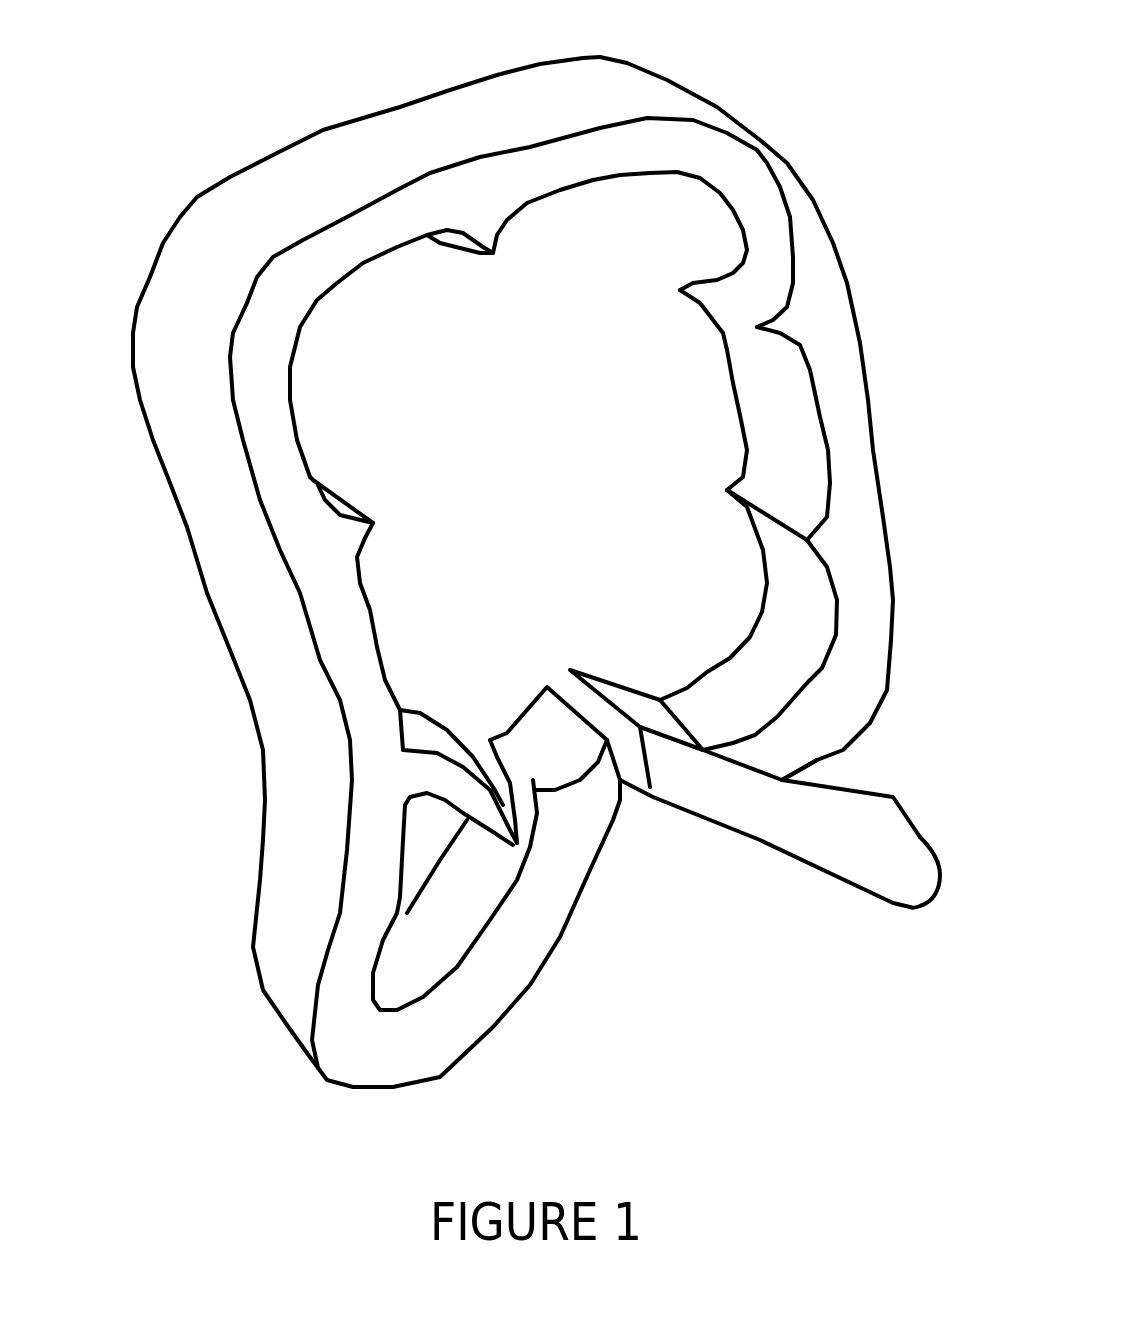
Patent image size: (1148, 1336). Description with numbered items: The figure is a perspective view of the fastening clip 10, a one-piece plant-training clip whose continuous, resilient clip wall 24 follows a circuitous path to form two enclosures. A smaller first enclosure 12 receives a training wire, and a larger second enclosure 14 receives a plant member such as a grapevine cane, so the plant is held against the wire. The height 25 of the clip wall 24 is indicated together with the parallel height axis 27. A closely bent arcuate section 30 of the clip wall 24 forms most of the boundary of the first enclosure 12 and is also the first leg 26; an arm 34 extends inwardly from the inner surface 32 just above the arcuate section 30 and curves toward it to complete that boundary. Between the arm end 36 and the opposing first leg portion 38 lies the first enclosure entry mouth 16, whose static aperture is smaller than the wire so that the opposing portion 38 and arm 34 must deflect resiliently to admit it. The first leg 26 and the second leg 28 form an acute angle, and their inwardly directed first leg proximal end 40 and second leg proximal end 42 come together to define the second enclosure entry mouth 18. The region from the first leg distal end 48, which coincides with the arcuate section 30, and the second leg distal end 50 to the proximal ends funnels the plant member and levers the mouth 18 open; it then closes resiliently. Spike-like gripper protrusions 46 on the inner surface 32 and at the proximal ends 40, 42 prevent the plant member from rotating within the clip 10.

The fastening clip 10 is at (299, 97).
The first enclosure 12 is at (434, 831).
The second enclosure 14 is at (623, 273).
The first enclosure entry mouth 16 is at (475, 740).
The second enclosure entry mouth 18 is at (630, 797).
The clip wall 24 is at (267, 643).
The height 25 is at (817, 670).
The first leg 26 is at (423, 1047).
The height axis 27 is at (910, 665).
The second leg 28 is at (853, 843).
The arcuate section 30 is at (343, 1055).
The inner surface 32 is at (380, 637).
The arm 34 is at (440, 777).
The arm end 36 is at (473, 803).
The opposing first leg portion 38 is at (522, 853).
The first leg proximal end 40 is at (548, 738).
The second leg proximal end 42 is at (627, 705).
The gripper protrusions 46 is at (337, 507).
The first leg distal end 48 is at (387, 1063).
The second leg distal end 50 is at (907, 880).